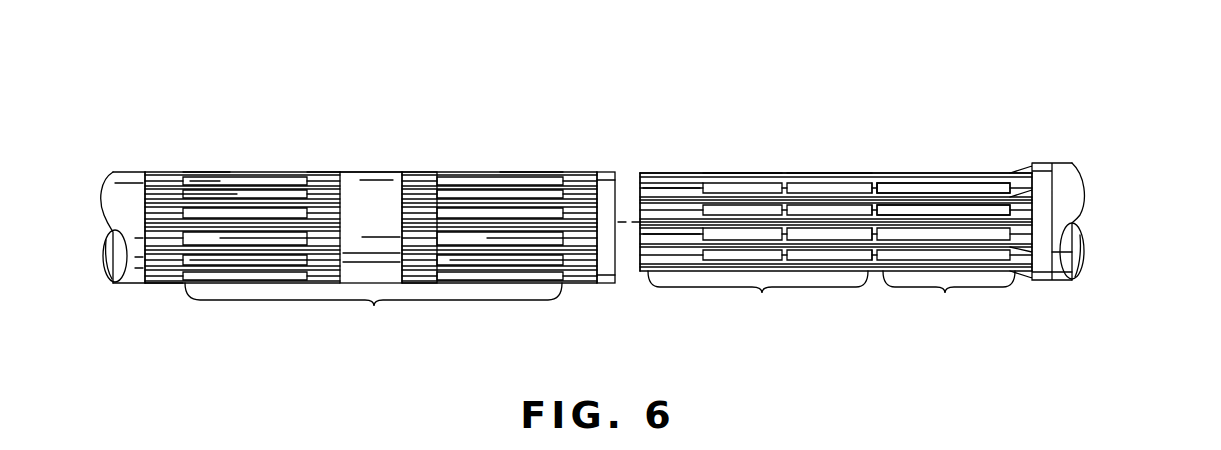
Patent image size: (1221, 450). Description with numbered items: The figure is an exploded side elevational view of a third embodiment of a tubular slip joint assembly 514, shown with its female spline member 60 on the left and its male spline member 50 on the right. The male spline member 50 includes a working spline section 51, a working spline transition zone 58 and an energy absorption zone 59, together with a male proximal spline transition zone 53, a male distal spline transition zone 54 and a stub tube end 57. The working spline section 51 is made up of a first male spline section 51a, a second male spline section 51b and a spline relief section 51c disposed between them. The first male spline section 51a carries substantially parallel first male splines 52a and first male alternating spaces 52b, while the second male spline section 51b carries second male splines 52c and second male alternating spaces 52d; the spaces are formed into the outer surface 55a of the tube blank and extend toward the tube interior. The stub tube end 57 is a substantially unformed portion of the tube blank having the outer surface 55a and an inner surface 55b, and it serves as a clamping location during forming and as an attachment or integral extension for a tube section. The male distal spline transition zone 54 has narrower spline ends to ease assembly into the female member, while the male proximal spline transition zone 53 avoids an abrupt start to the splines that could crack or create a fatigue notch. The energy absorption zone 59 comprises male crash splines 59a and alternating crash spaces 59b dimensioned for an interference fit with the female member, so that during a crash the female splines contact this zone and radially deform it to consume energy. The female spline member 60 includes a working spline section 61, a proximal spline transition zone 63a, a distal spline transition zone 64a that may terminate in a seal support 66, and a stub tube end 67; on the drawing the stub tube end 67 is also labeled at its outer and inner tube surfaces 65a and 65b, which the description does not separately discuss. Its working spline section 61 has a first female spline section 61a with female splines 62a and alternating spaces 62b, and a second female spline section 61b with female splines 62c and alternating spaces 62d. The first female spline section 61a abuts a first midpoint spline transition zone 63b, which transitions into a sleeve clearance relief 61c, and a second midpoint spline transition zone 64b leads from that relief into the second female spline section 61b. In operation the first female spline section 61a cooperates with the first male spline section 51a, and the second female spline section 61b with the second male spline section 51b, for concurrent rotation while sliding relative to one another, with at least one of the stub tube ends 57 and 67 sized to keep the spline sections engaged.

The male spline member 50 is at (902, 122).
The slip joint assembly 514 is at (703, 90).
The working spline section 51 is at (836, 248).
The first male spline section 51a is at (690, 180).
The second male spline section 51b is at (812, 188).
The spline relief section 51c is at (737, 178).
The first male splines 52a is at (653, 188).
The first male alternating spaces 52b is at (672, 225).
The second male splines 52c is at (840, 196).
The second male alternating spaces 52d is at (857, 175).
The male proximal spline transition zone 53 is at (1024, 280).
The male distal spline transition zone 54 is at (640, 275).
The outer surface 55a is at (1050, 280).
The inner surface 55b is at (1078, 250).
The stub tube end 57 is at (1100, 198).
The working spline transition zone 58 is at (880, 278).
The energy absorption zone 59 is at (946, 253).
The male crash splines 59a is at (960, 185).
The alternating crash spaces 59b is at (1006, 197).
The female spline member 60 is at (380, 152).
The working spline section 61 is at (371, 255).
The first female spline section 61a is at (203, 172).
The second female spline section 61b is at (533, 172).
The sleeve clearance relief 61c is at (360, 172).
The female splines 62a is at (236, 205).
The alternating spaces 62b is at (277, 215).
The female splines 62c is at (457, 230).
The alternating spaces 62d is at (496, 210).
The proximal spline transition zone 63a is at (168, 283).
The first midpoint spline transition zone 63b is at (326, 175).
The distal spline transition zone 64a is at (582, 175).
The second midpoint spline transition zone 64b is at (418, 177).
The end cap 65a is at (125, 173).
The eyelet ring 65b is at (112, 255).
The seal support 66 is at (600, 283).
The stub tube end 67 is at (92, 193).